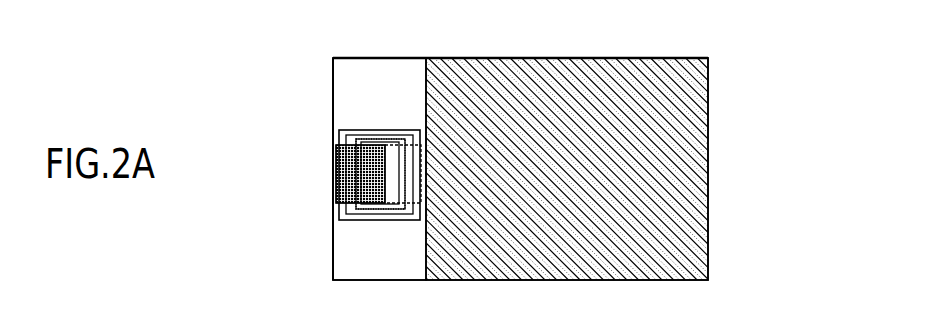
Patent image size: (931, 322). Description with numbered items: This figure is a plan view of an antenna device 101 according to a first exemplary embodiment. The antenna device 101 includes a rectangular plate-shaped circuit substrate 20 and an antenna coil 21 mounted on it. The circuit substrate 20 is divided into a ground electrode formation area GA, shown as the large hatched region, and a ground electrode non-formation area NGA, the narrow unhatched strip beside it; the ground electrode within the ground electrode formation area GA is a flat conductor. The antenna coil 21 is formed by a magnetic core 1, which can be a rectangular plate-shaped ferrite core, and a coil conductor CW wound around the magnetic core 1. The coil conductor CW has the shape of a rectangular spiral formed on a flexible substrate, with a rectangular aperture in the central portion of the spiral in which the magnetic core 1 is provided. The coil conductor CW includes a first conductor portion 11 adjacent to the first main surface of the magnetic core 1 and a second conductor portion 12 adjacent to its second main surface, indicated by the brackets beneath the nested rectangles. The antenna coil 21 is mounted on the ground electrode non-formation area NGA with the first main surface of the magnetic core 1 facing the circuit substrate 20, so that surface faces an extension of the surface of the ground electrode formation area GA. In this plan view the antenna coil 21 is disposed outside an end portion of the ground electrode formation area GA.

The circuit substrate 20 is at (333, 57).
The antenna coil 21 is at (322, 107).
The ground electrode non-formation area NGA is at (366, 85).
The ground electrode formation area GA is at (628, 78).
The antenna device 101 is at (768, 44).
The coil conductor CW is at (382, 130).
The magnetic core 1 is at (343, 172).
The first conductor portion 11 is at (370, 225).
The second conductor portion 12 is at (422, 225).